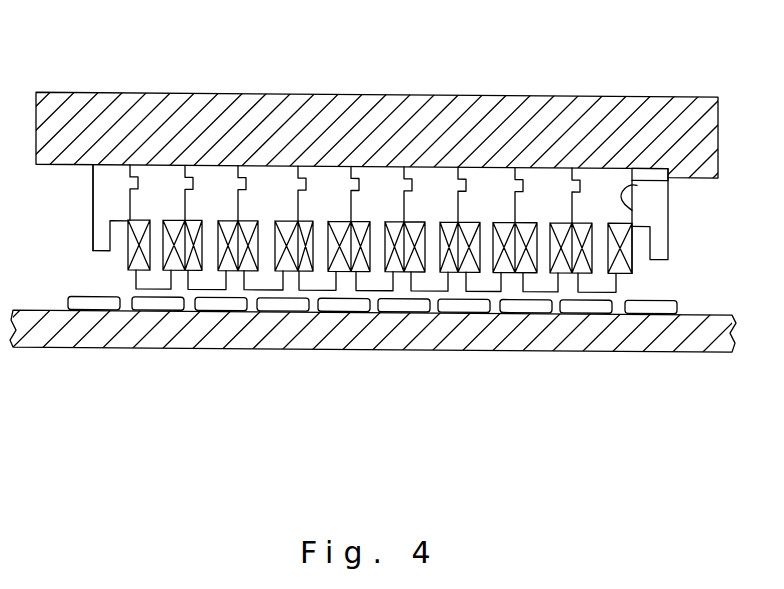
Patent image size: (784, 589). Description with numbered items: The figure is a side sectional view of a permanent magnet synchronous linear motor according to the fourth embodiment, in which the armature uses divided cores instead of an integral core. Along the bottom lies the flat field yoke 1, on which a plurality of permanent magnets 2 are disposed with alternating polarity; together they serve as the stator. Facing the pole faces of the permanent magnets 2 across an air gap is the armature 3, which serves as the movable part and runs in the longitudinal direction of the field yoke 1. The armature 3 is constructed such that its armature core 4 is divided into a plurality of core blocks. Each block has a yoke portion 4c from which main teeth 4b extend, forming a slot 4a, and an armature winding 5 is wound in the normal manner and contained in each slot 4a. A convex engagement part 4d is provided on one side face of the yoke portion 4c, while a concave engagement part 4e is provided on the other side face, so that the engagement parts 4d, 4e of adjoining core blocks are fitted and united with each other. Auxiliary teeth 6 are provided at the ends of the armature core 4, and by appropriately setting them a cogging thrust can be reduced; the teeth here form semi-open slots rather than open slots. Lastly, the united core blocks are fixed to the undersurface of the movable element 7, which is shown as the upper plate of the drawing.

The field yoke 1 is at (137, 346).
The permanent magnets 2 is at (463, 312).
The armature 3 is at (72, 216).
The armature core 4 is at (483, 179).
The slot 4a is at (402, 217).
The main teeth 4b is at (214, 256).
The yoke portion 4c is at (218, 194).
The convex engagement part 4d is at (637, 181).
The concave engagement part 4e is at (668, 213).
The armature winding 5 is at (337, 266).
The auxiliary teeth 6 is at (92, 232).
The movable element 7 is at (165, 137).